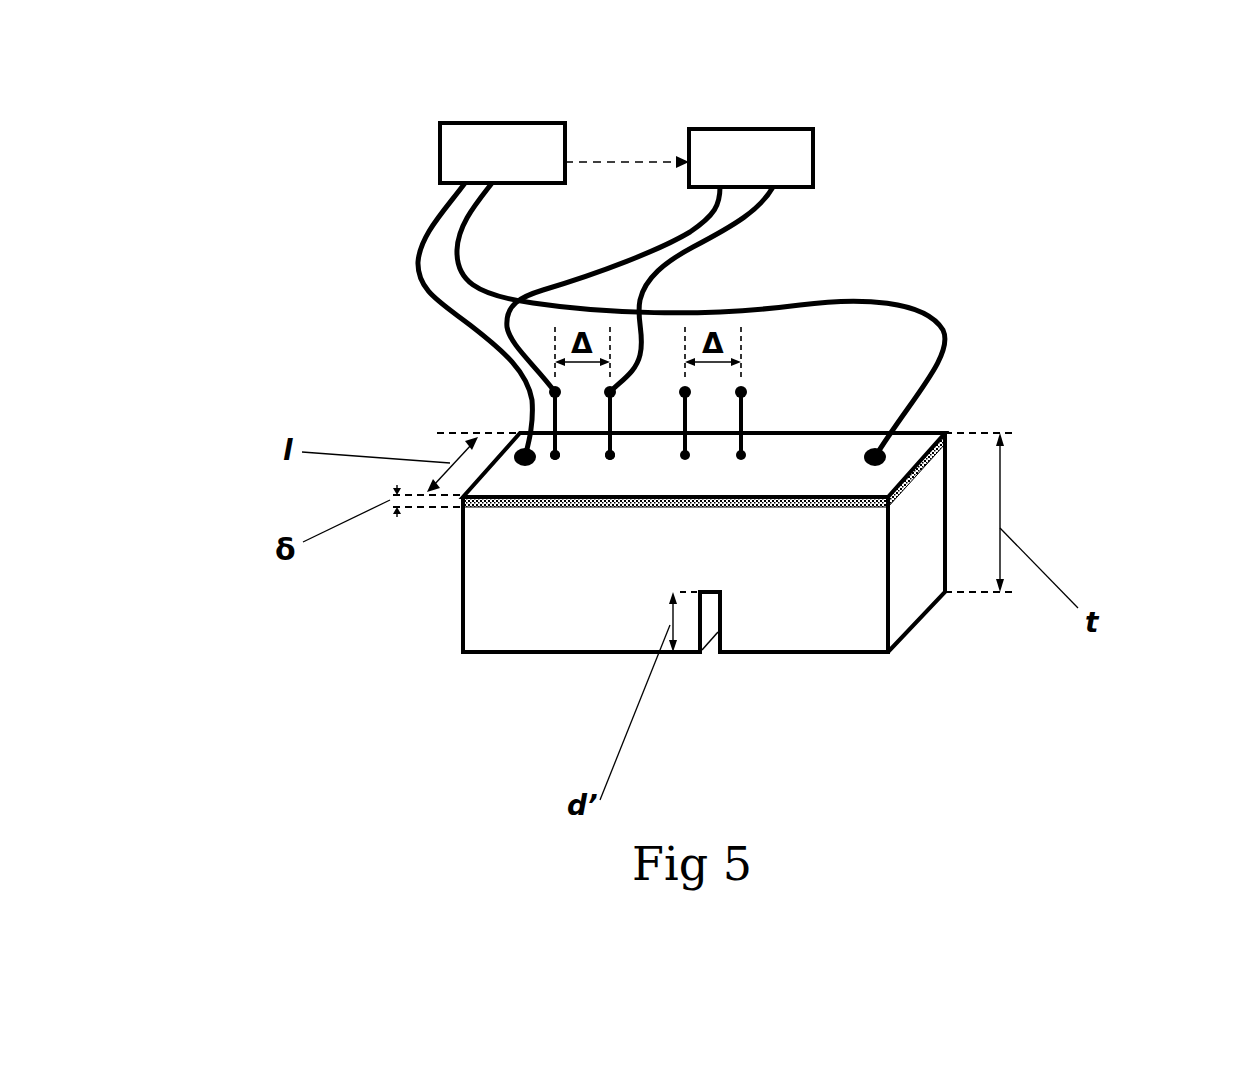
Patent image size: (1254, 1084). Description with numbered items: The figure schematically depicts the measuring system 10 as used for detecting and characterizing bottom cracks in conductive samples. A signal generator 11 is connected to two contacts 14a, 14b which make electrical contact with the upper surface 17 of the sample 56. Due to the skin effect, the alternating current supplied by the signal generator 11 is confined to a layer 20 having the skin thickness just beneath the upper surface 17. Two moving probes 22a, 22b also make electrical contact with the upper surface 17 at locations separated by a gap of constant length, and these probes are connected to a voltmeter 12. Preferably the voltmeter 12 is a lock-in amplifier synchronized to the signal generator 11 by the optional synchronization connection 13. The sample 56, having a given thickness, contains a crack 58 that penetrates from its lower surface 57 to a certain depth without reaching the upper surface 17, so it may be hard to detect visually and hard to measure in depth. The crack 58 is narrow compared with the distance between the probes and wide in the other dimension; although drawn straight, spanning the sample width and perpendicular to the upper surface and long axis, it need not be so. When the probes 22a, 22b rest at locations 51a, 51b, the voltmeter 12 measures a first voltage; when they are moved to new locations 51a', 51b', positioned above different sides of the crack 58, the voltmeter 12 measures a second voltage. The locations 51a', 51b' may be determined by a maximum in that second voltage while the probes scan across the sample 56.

The measuring system 10 is at (972, 140).
The signal generator 11 is at (440, 155).
The voltmeter 12 is at (689, 130).
The synchronization connection 13 is at (613, 162).
The contact 14a is at (518, 450).
The contact 14b is at (903, 431).
The upper surface 17 is at (945, 433).
The layer 20 is at (522, 497).
The moving probe 22a is at (557, 415).
The moving probe 22b is at (603, 423).
The location 51a is at (438, 589).
The location 51b is at (477, 610).
The location 51a' is at (803, 600).
The location 51b' is at (850, 577).
The sample 56 is at (913, 563).
The lower surface 57 is at (888, 652).
The crack 58 is at (722, 614).